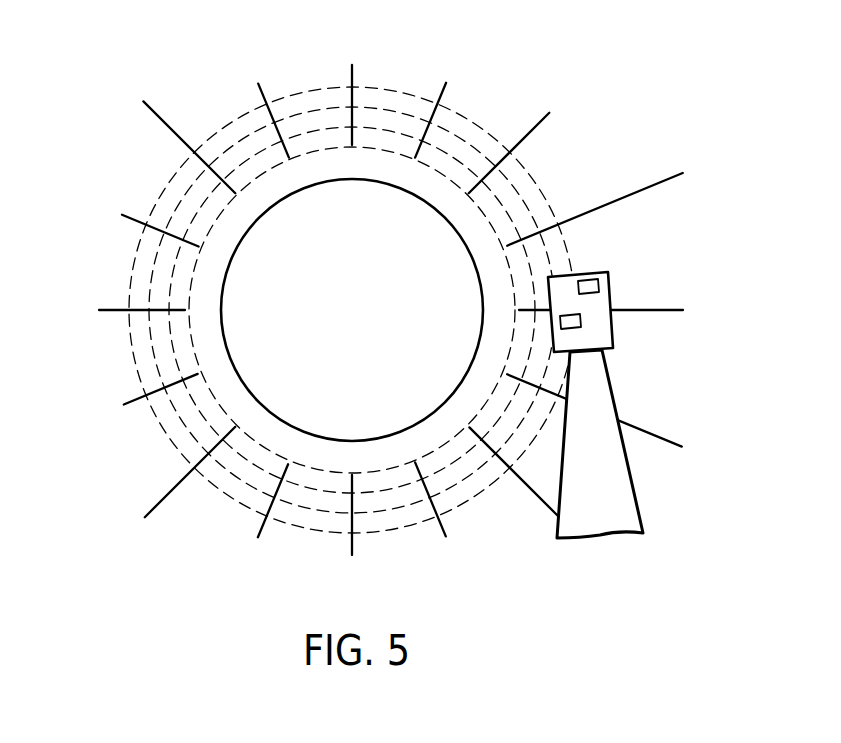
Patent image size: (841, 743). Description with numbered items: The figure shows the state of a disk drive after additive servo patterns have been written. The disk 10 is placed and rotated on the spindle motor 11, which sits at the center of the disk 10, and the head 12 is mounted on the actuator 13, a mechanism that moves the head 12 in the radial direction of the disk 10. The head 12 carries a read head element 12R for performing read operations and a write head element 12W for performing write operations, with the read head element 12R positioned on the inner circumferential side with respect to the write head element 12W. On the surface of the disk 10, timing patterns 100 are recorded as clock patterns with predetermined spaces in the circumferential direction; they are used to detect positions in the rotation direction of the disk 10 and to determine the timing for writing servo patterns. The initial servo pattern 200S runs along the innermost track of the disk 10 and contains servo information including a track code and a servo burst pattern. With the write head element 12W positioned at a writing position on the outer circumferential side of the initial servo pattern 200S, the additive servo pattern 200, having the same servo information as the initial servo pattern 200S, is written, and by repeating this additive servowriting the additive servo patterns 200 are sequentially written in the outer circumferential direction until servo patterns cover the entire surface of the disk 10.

The disk medium 10 is at (150, 465).
The spindle motor 11 is at (240, 328).
The head 12 is at (613, 326).
The write head element 12W is at (599, 285).
The read head element 12R is at (570, 329).
The actuator 13 is at (635, 492).
The timing patterns 100 is at (168, 495).
The additive servo pattern 200 is at (150, 272).
The initial servo pattern 200S is at (460, 437).